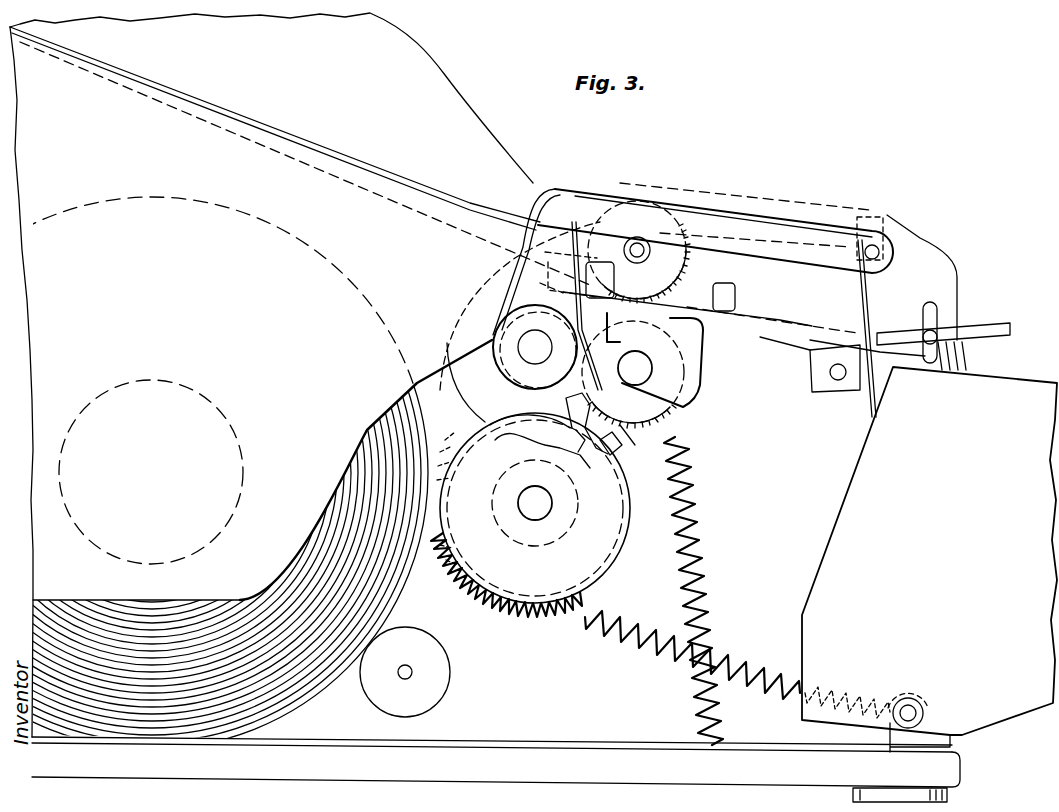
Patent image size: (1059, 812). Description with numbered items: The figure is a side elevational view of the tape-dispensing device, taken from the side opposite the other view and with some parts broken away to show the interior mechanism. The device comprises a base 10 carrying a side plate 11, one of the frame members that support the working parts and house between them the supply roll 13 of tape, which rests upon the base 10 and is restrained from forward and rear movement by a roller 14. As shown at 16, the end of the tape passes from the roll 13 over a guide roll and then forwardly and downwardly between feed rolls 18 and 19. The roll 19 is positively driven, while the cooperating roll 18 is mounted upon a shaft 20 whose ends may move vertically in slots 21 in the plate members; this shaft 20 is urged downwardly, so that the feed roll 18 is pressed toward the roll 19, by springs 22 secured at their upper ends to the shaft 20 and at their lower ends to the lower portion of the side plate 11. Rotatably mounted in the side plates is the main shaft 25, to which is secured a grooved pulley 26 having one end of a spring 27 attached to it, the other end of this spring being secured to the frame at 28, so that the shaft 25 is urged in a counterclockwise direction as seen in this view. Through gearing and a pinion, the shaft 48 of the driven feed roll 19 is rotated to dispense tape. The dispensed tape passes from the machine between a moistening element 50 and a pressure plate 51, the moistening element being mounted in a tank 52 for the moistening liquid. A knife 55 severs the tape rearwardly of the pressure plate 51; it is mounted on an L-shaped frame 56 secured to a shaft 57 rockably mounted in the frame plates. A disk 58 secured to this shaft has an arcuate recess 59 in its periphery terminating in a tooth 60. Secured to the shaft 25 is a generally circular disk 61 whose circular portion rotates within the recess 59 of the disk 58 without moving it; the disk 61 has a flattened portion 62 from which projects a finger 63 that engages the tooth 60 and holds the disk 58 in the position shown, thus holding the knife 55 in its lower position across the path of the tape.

The base 10 is at (555, 752).
The side plate 11 is at (432, 90).
The supply roll 13 is at (345, 523).
The roller 14 is at (430, 685).
The end of the tape 16 is at (378, 196).
The feed roll 18 is at (672, 262).
The feed roll 19 is at (637, 325).
The shaft 20 is at (630, 240).
The slot 21 is at (645, 240).
The spring 22 is at (700, 548).
The main shaft 25 is at (540, 515).
The grooved pulley 26 is at (590, 590).
The spring 27 is at (578, 640).
The frame anchorage 28 is at (925, 708).
The shaft 48 is at (633, 360).
The moistening element 50 is at (965, 352).
The pressure plate 51 is at (985, 325).
The tank 52 is at (1002, 516).
The knife 55 is at (870, 305).
The L-shaped frame 56 is at (715, 220).
The shaft 57 is at (527, 340).
The disk 58 is at (458, 362).
The arcuate recess 59 is at (505, 415).
The tooth 60 is at (562, 412).
The disk 61 is at (500, 452).
The flattened portion 62 is at (622, 437).
The finger 63 is at (576, 456).